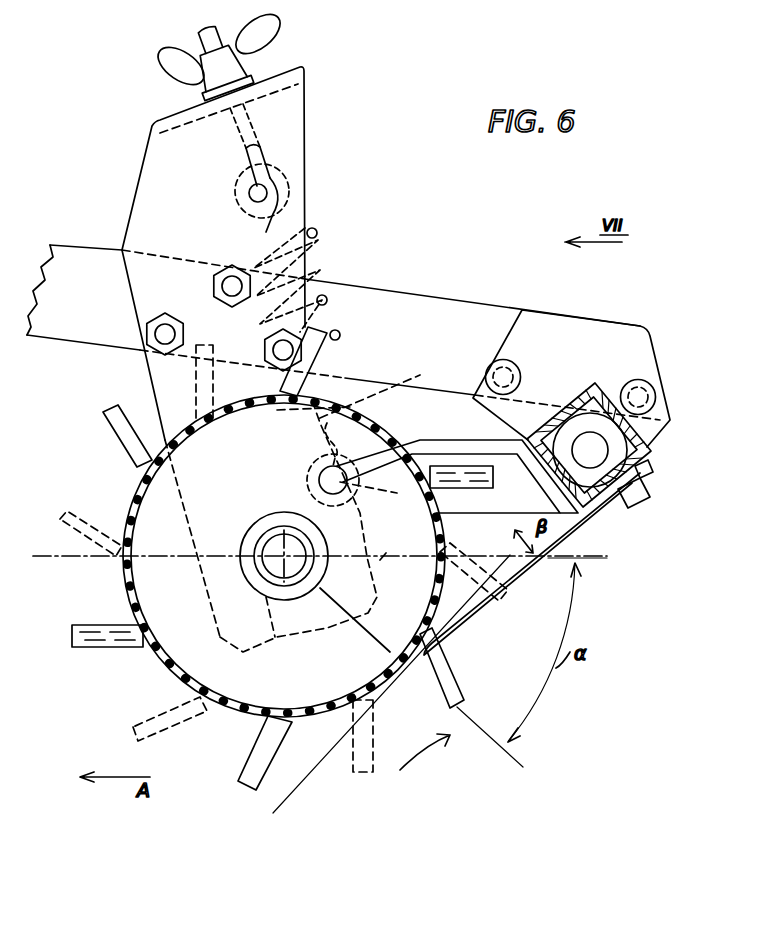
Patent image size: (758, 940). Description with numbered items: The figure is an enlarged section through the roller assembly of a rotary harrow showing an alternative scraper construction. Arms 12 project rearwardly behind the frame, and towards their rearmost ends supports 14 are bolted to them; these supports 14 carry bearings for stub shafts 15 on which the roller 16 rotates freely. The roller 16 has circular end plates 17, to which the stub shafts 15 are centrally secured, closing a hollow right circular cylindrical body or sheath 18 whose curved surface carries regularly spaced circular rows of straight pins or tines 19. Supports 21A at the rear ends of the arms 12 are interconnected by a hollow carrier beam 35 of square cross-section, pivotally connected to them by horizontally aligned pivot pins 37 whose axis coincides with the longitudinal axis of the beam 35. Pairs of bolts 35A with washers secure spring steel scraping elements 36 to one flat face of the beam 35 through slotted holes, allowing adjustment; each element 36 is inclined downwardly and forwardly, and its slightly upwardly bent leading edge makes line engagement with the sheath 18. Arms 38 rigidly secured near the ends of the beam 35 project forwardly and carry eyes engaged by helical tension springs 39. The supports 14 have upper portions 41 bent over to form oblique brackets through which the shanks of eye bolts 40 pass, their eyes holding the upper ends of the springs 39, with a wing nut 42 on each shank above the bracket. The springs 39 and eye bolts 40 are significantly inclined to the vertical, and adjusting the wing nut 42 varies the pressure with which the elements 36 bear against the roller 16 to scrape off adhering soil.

The arm 12 is at (63, 336).
The support 14 is at (157, 370).
The stub shaft 15 is at (272, 544).
The roller 16 is at (128, 502).
The end plate 17 is at (140, 573).
The body or sheath 18 is at (160, 657).
The pin or tine 19 is at (250, 748).
The support 21A is at (575, 323).
The carrier beam 35 is at (590, 386).
The bolt 35A is at (620, 500).
The scraping element 36 is at (565, 533).
The pivot pin 37 is at (583, 454).
The arm 38 is at (490, 443).
The helical tension spring 39 is at (315, 274).
The eye bolt 40 is at (238, 133).
The upper portion 41 is at (137, 197).
The wing nut 42 is at (268, 47).